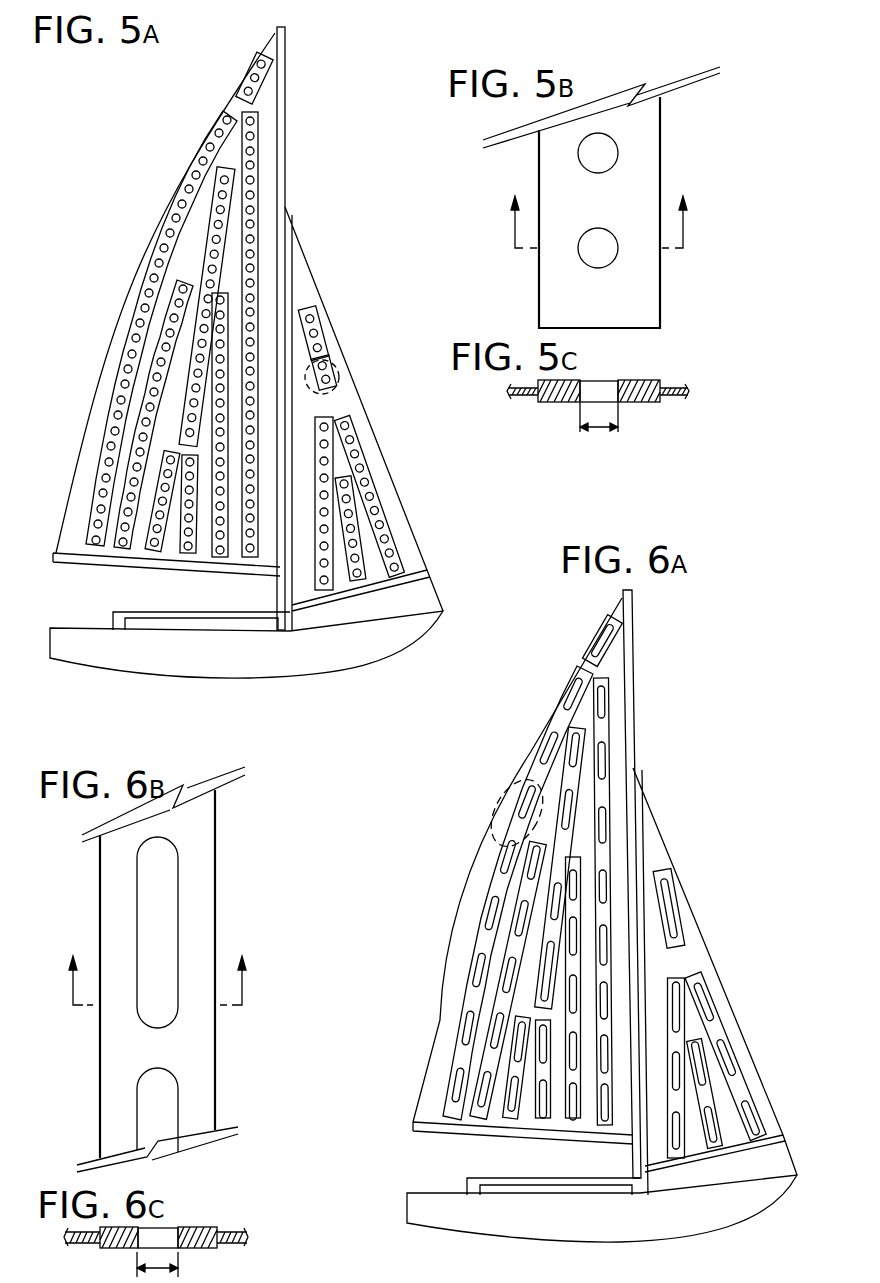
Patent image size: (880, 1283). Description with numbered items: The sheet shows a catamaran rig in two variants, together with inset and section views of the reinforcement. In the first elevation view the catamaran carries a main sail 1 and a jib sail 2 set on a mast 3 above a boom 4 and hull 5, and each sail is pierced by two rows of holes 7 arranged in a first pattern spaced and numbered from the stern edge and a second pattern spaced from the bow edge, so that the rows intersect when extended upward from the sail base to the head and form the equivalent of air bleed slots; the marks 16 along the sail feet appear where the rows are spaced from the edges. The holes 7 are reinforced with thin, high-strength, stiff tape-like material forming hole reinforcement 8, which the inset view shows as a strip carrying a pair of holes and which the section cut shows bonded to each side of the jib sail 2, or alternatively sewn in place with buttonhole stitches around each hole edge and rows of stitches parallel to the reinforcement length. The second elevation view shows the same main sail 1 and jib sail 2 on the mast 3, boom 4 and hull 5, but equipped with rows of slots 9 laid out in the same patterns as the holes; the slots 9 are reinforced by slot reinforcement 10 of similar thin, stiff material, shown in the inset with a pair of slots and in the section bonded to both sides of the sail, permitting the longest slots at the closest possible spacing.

In FIG. 5A, the main sail 1 is at (158, 185).
In FIG. 6A, the main sail 1 is at (536, 742).
In FIG. 6C, the main sail 1 is at (247, 1238).
In FIG. 5A, the jib sail 2 is at (310, 265).
In FIG. 5C, the jib sail 2 is at (688, 392).
In FIG. 6A, the jib sail 2 is at (712, 960).
In FIG. 5A, the mast 3 is at (286, 95).
In FIG. 6A, the mast 3 is at (633, 687).
In FIG. 5A, the boom 4 is at (55, 553).
In FIG. 6A, the boom 4 is at (413, 1120).
In FIG. 5A, the hull 5 is at (445, 628).
In FIG. 6A, the hull 5 is at (785, 1208).
In FIG. 5A, the holes 7 is at (155, 255).
In FIG. 5B, the holes 7 is at (616, 236).
In FIG. 5C, the holes 7 is at (580, 427).
In FIG. 5A, the hole reinforcement 8 is at (215, 122).
In FIG. 5B, the hole reinforcement 8 is at (660, 295).
In FIG. 5C, the hole reinforcement 8 is at (640, 382).
In FIG. 6A, the slots 9 is at (608, 760).
In FIG. 6B, the slots 9 is at (180, 912).
In FIG. 6C, the slots 9 is at (137, 1268).
In FIG. 6A, the slot reinforcement 10 is at (598, 678).
In FIG. 6B, the slot reinforcement 10 is at (215, 840).
In FIG. 6C, the slot reinforcement 10 is at (195, 1228).
In FIG. 5A, the sail attachment hanks 16 is at (113, 612).
In FIG. 6A, the sail attachment hanks 16 is at (467, 1178).